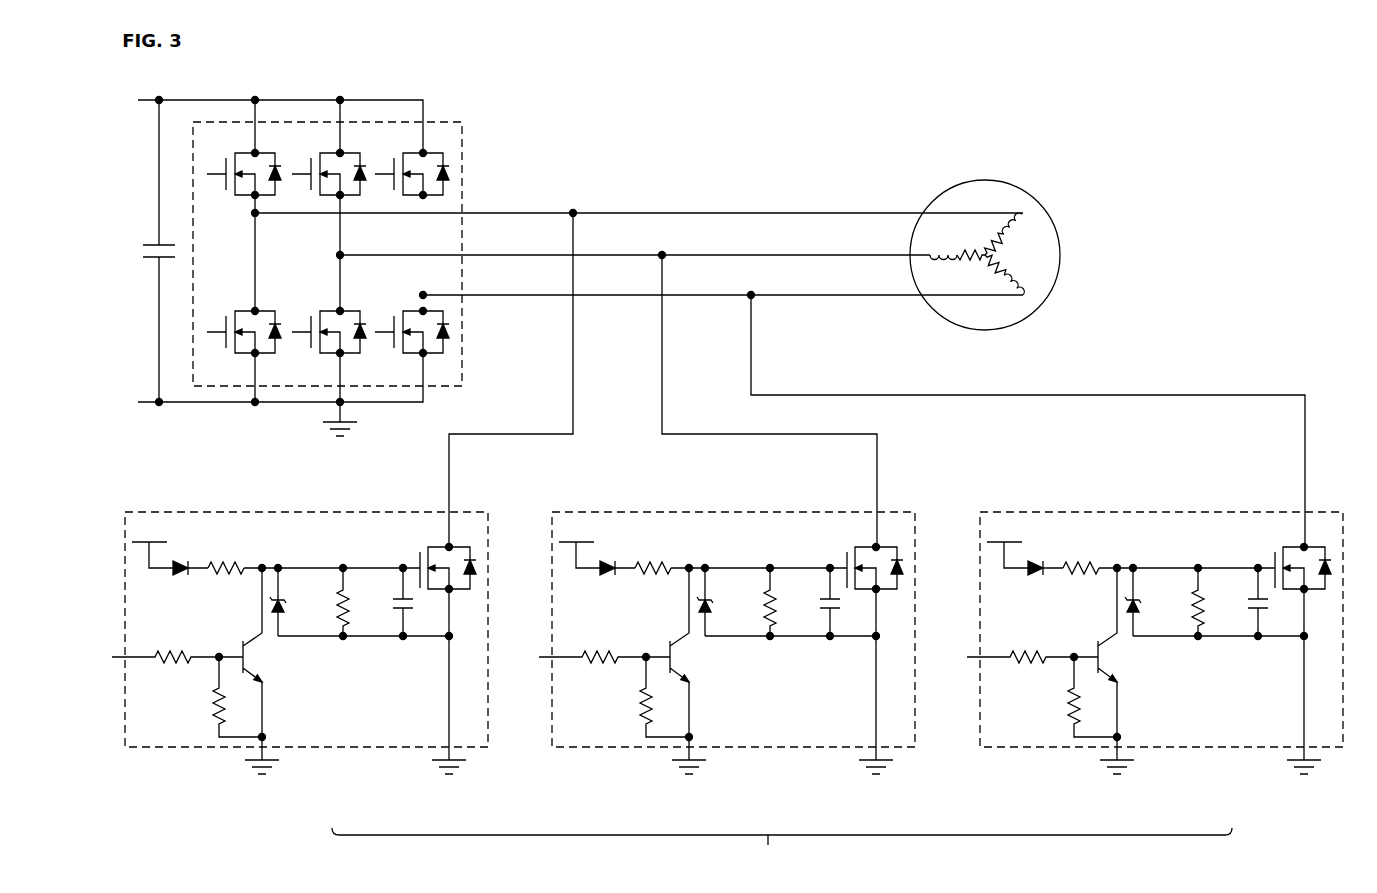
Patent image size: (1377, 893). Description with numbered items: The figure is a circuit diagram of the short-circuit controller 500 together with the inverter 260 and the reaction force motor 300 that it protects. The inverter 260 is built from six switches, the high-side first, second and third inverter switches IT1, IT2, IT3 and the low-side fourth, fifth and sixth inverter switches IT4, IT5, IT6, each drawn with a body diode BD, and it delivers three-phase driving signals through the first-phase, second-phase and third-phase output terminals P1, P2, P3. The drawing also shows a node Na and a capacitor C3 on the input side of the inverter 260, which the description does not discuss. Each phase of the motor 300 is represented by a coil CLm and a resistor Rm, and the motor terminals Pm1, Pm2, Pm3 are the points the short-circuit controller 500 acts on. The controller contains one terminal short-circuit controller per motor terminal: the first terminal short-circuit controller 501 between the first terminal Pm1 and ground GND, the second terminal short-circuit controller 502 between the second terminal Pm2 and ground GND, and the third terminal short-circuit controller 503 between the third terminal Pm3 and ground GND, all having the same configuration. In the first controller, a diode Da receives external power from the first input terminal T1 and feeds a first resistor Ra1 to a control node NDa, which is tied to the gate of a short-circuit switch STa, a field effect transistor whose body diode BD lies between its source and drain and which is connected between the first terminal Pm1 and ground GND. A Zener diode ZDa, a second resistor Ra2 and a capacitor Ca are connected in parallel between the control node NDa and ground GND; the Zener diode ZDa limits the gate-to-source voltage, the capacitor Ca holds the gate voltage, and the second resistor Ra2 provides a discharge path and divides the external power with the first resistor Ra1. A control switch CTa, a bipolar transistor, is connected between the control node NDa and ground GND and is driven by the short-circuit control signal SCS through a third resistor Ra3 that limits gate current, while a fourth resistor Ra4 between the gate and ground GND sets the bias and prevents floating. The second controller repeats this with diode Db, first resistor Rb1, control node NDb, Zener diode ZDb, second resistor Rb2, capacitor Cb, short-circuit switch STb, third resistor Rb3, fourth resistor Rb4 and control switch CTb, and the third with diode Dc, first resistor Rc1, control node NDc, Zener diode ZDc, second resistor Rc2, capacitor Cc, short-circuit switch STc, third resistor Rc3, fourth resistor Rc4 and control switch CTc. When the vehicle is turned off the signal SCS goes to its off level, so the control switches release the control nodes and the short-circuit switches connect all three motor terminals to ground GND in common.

The inverter 260 is at (462, 143).
The reaction force motor 300 is at (1030, 255).
The short-circuit controller 500 is at (782, 850).
The first terminal short-circuit controller 501 is at (306, 669).
The second terminal short-circuit controller 502 is at (733, 669).
The third terminal short-circuit controller 503 is at (1161, 669).
The DC link node Na is at (159, 100).
The DC link capacitor C3 is at (146, 264).
The first inverter switch IT1 is at (241, 164).
The second inverter switch IT2 is at (324, 164).
The third inverter switch IT3 is at (407, 164).
The fourth inverter switch IT4 is at (241, 344).
The fifth inverter switch IT5 is at (324, 344).
The sixth inverter switch IT6 is at (407, 344).
The body diode BD is at (804, 389).
The first-phase output terminal P1 is at (255, 213).
The second-phase output terminal P2 is at (340, 255).
The third-phase output terminal P3 is at (423, 295).
The first terminal of the motor Pm1 is at (573, 213).
The second terminal of the motor Pm2 is at (662, 255).
The third terminal of the motor Pm3 is at (751, 295).
The coil CLm is at (973, 253).
The resistor Rm is at (981, 259).
The ground GND is at (782, 613).
The first input terminal T1 is at (580, 542).
The short-circuit control signal SCS is at (527, 656).
The diode Da is at (189, 585).
The diode Db is at (616, 585).
The diode Dc is at (1044, 585).
The first resistor Ra1 is at (226, 586).
The first resistor Rb1 is at (653, 586).
The first resistor Rc1 is at (1081, 586).
The second resistor Ra2 is at (363, 602).
The second resistor Rb2 is at (791, 602).
The second resistor Rc2 is at (1218, 602).
The third resistor Ra3 is at (172, 642).
The third resistor Rb3 is at (599, 642).
The third resistor Rc3 is at (1027, 642).
The fourth resistor Ra4 is at (215, 697).
The fourth resistor Rb4 is at (642, 697).
The fourth resistor Rc4 is at (1070, 697).
The control node NDa is at (262, 568).
The control node NDb is at (710, 549).
The control node NDc is at (1137, 549).
The Zener diode ZDa is at (298, 602).
The Zener diode ZDb is at (725, 602).
The Zener diode ZDc is at (1153, 602).
The capacitor Ca is at (417, 602).
The capacitor Cb is at (844, 602).
The capacitor Cc is at (1272, 602).
The short-circuit switch STa is at (438, 556).
The short-circuit switch STb is at (864, 556).
The short-circuit switch STc is at (1293, 556).
The control switch CTa is at (261, 652).
The control switch CTb is at (689, 652).
The control switch CTc is at (1115, 652).